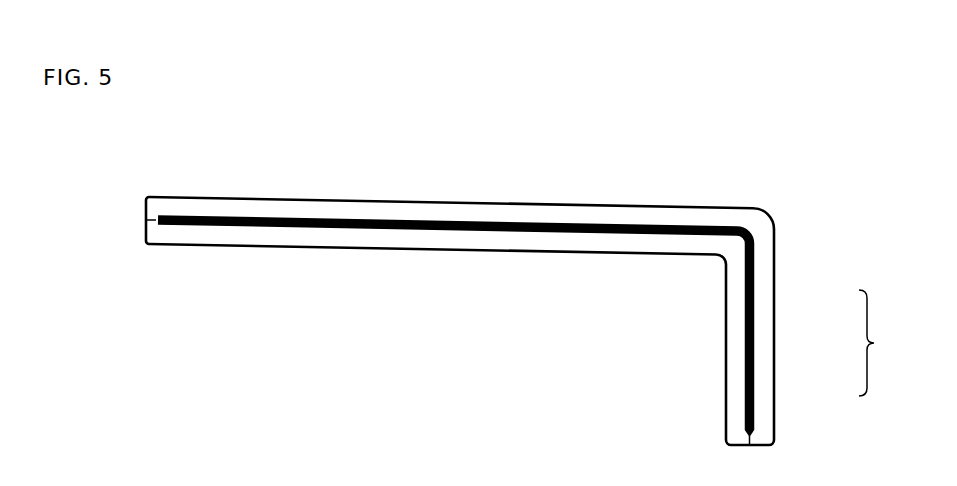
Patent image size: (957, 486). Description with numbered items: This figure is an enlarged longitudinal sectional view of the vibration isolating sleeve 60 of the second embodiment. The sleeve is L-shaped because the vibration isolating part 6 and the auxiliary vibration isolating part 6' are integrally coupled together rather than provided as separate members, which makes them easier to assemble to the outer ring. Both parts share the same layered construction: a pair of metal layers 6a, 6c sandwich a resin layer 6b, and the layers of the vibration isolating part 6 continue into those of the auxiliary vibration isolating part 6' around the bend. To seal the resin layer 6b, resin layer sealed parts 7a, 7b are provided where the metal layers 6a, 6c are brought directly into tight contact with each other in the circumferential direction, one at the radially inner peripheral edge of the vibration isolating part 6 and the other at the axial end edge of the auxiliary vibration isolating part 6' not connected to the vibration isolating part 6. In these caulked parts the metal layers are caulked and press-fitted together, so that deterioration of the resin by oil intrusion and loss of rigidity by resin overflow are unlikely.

The vibration isolating sleeve 60 is at (746, 160).
The auxiliary vibration isolating part 6' is at (448, 222).
The vibration isolating part 6 is at (875, 343).
The metal layer 6a is at (738, 387).
The resin layer 6b is at (757, 350).
The metal layer 6c is at (763, 310).
The resin layer sealed part 7a is at (710, 445).
The resin layer sealed part 7b is at (140, 254).